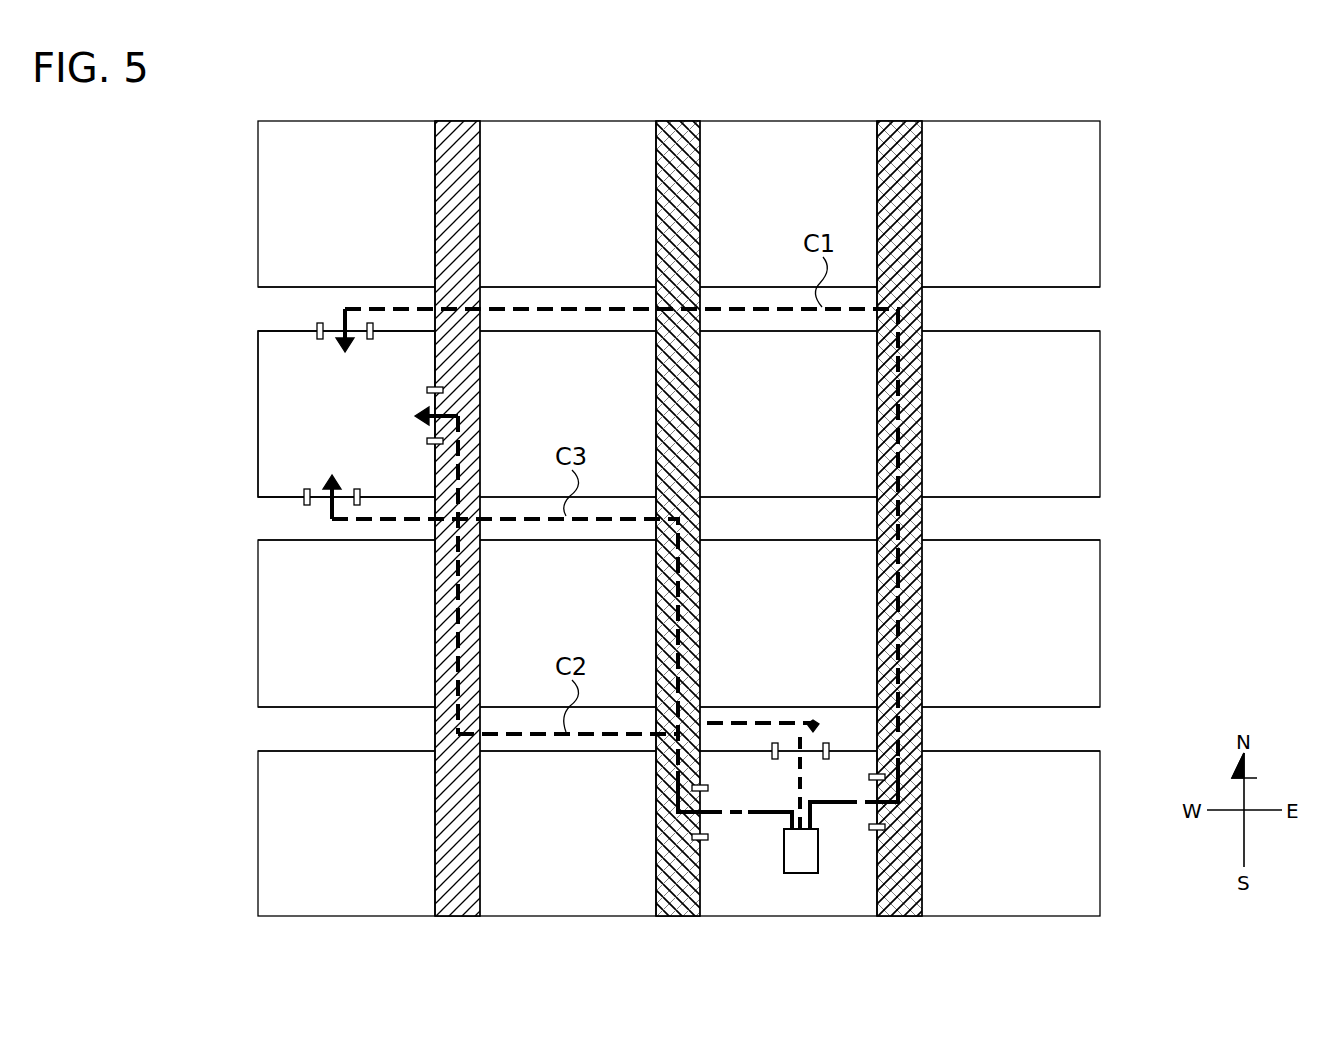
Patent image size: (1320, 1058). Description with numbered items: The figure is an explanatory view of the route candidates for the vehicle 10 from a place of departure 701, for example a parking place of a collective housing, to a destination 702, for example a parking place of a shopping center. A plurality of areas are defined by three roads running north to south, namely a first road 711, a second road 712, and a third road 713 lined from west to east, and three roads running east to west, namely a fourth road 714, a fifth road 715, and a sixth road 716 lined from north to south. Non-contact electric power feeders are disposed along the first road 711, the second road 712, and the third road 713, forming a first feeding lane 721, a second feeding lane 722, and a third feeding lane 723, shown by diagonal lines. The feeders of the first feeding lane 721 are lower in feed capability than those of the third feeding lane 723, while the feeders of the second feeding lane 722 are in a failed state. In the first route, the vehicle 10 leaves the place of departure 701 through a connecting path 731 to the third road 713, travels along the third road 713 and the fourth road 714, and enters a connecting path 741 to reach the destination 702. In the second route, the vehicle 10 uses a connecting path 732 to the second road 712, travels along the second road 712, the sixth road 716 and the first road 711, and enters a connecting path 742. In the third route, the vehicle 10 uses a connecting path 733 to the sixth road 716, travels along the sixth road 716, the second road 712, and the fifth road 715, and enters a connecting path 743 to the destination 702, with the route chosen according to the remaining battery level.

The vehicle 10 is at (784, 850).
The place of departure 701 is at (801, 905).
The destination 702 is at (276, 437).
The first road 711 is at (462, 118).
The second road 712 is at (680, 118).
The third road 713 is at (901, 118).
The fourth road 714 is at (250, 310).
The fifth road 715 is at (250, 519).
The sixth road 716 is at (250, 729).
The first feeding lane 721 is at (435, 187).
The second feeding lane 722 is at (656, 187).
The third feeding lane 723 is at (877, 187).
The connecting path 731 is at (904, 814).
The connecting path 732 is at (692, 828).
The connecting path 733 is at (819, 722).
The connecting path 741 is at (338, 306).
The connecting path 742 is at (450, 404).
The connecting path 743 is at (344, 482).